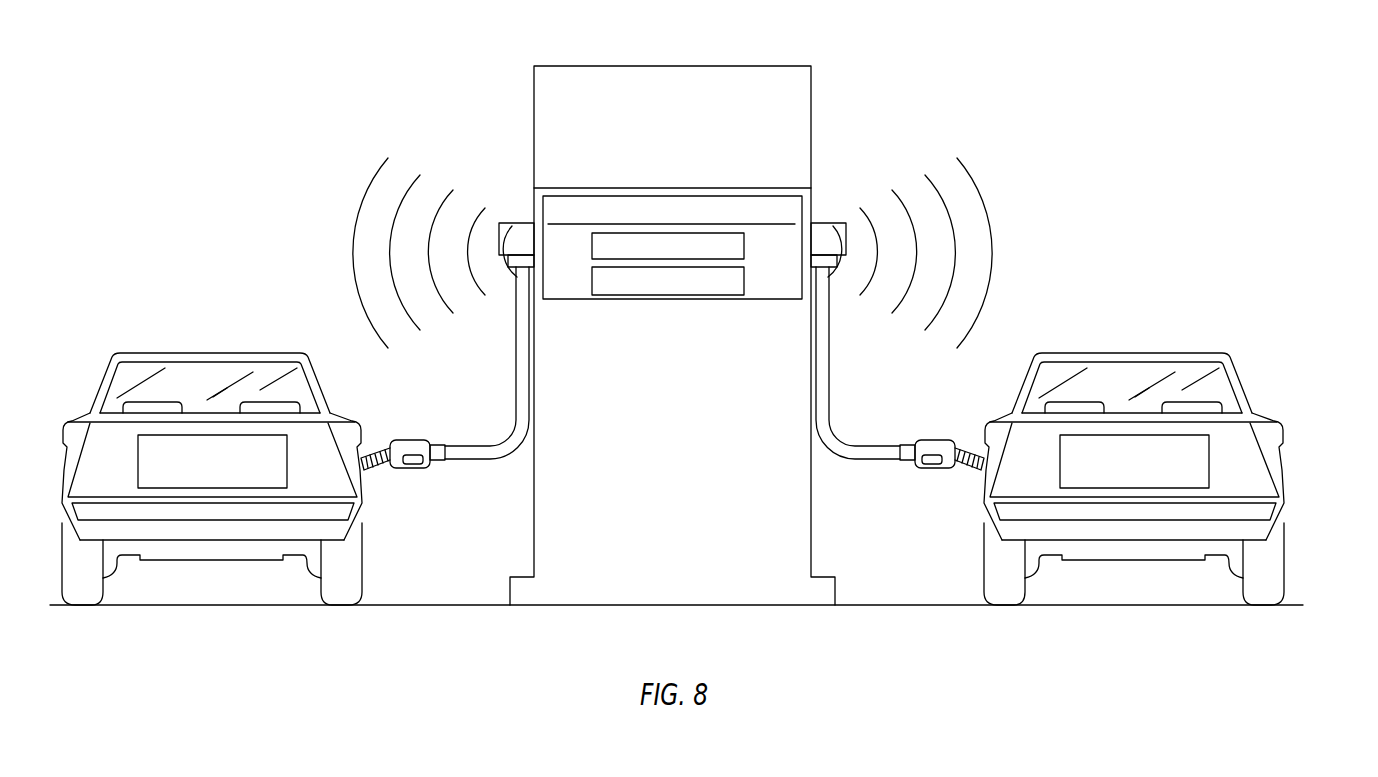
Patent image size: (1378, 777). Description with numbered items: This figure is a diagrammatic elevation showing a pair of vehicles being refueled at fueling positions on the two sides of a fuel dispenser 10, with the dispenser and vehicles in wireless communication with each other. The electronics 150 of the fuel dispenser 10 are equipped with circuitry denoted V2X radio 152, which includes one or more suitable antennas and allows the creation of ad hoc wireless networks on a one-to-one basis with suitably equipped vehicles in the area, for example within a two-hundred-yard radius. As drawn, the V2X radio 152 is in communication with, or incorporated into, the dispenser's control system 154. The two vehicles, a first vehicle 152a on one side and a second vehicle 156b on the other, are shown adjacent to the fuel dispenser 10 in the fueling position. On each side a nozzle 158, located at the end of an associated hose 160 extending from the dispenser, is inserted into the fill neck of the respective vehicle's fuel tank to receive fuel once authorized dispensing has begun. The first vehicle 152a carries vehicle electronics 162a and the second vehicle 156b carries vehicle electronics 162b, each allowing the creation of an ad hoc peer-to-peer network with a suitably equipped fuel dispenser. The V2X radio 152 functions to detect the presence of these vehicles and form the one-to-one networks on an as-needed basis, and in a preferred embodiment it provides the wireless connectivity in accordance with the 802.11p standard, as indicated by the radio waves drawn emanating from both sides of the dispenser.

The fuel dispenser 10 is at (811, 104).
The electronics 150 is at (602, 300).
The V2X radio 152 is at (744, 243).
The control system 154 is at (667, 300).
The vehicle 152a is at (230, 352).
The vehicle 156b is at (1132, 352).
The nozzle 158 is at (410, 440).
The hose 160 is at (518, 353).
The vehicle electronics 162a is at (287, 470).
The vehicle electronics 162b is at (1209, 457).